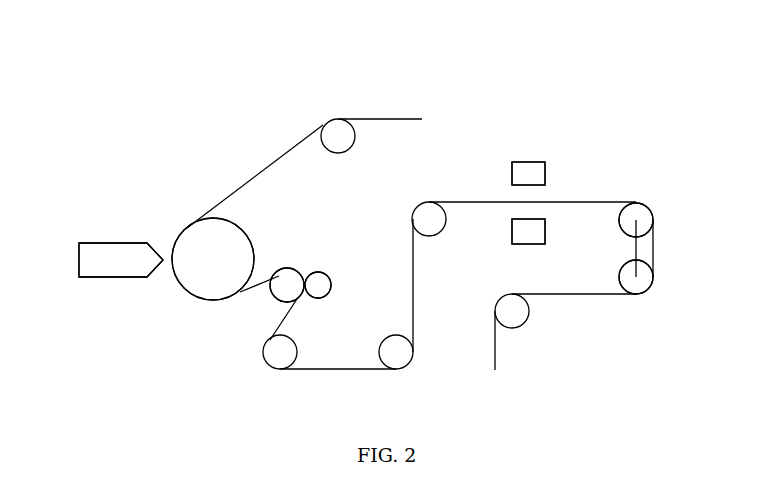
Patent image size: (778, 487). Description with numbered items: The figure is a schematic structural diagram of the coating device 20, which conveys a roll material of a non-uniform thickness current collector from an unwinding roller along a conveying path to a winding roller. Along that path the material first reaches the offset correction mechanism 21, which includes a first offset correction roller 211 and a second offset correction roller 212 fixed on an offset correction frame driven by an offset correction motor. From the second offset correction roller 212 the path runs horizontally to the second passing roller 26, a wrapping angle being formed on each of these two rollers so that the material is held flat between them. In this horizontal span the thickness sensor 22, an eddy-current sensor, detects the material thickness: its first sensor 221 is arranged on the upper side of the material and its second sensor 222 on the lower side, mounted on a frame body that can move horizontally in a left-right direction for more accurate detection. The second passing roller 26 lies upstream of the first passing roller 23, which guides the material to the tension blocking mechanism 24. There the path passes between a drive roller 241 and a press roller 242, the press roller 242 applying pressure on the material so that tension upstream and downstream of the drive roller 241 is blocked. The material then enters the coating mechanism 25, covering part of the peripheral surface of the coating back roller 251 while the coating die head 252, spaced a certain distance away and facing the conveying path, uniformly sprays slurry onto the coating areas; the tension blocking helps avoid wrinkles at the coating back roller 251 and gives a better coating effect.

The coating device 20 is at (438, 88).
The offset correction mechanism 21 is at (687, 250).
The first offset correction roller 211 is at (630, 277).
The second offset correction roller 212 is at (636, 220).
The thickness sensor 22 is at (553, 137).
The first sensor 221 is at (528, 178).
The second sensor 222 is at (528, 228).
The first passing roller 23 is at (280, 352).
The tension blocking mechanism 24 is at (304, 260).
The drive roller 241 is at (287, 285).
The press roller 242 is at (318, 285).
The coating mechanism 25 is at (163, 212).
The coating back roller 251 is at (213, 259).
The coating die head 252 is at (120, 262).
The second passing roller 26 is at (429, 219).